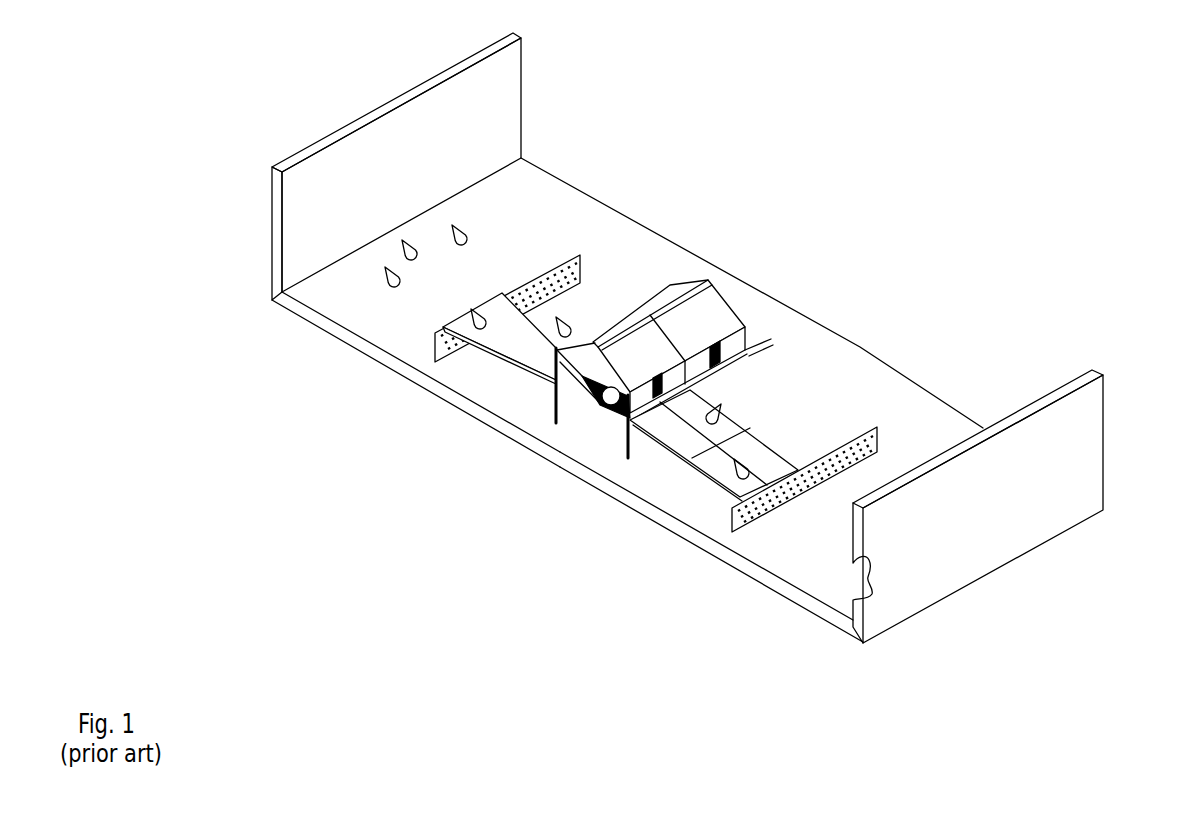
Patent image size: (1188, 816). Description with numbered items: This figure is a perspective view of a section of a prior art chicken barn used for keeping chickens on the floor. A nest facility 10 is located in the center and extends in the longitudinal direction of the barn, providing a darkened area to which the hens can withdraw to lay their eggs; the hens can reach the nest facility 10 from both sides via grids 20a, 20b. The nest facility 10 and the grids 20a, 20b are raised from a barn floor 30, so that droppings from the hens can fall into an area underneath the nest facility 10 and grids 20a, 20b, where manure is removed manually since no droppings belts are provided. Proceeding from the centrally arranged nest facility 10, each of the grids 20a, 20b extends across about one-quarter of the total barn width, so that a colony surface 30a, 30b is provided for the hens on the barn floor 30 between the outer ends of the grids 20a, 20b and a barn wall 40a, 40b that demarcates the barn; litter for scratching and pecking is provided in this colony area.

The nest facility 10 is at (702, 323).
The grid 20a is at (757, 450).
The grid 20b is at (502, 338).
The barn floor 30 is at (655, 490).
The colony surface 30a is at (825, 543).
The colony surface 30b is at (535, 202).
The barn wall 40a is at (1072, 445).
The barn wall 40b is at (496, 112).